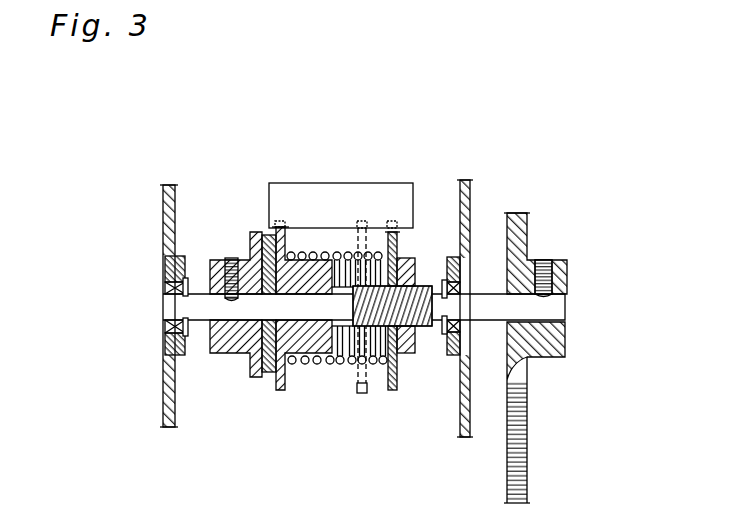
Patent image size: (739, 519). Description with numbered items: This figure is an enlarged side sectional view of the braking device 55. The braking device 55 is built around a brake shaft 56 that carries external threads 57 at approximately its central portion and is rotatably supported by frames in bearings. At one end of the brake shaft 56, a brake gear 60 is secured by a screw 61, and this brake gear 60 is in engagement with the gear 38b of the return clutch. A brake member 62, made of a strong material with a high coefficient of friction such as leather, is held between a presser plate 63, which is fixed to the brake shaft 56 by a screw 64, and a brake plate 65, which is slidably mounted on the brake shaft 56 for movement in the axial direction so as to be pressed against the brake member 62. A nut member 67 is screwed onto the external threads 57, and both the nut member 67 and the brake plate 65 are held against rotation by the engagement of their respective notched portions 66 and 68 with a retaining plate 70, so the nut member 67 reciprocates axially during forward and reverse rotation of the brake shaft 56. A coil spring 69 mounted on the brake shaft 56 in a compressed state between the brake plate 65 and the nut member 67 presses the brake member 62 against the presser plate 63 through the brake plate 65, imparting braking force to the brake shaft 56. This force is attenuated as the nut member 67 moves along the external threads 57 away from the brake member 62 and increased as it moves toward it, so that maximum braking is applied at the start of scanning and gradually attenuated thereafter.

The braking device 55 is at (367, 290).
The brake shaft 56 is at (487, 300).
The external threads 57 is at (424, 284).
The brake gear 60 is at (513, 213).
The screw 61 is at (567, 270).
The brake member 62 is at (268, 236).
The presser plate 63 is at (252, 233).
The screw 64 is at (228, 258).
The brake plate 65 is at (288, 250).
The notched portion 66 is at (282, 224).
The nut member 67 is at (388, 233).
The notched portion 68 is at (395, 236).
The coil spring 69 is at (323, 363).
The retaining plate 70 is at (342, 183).
The gear of the return clutch 38b is at (528, 466).